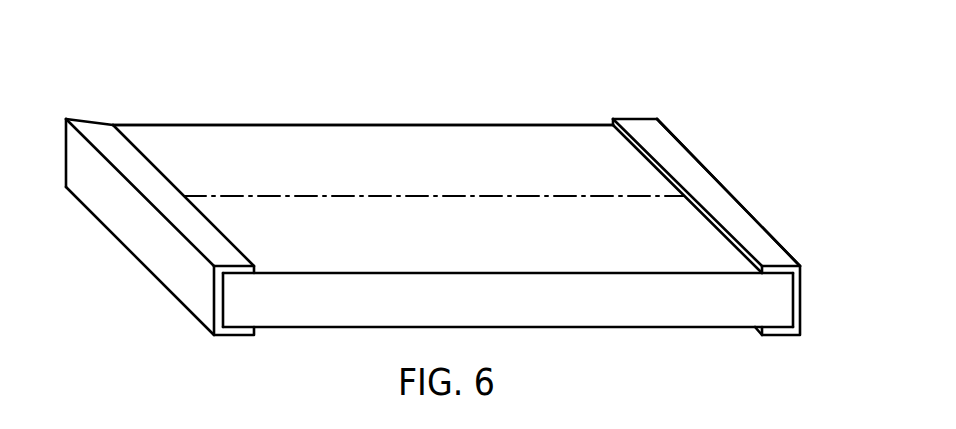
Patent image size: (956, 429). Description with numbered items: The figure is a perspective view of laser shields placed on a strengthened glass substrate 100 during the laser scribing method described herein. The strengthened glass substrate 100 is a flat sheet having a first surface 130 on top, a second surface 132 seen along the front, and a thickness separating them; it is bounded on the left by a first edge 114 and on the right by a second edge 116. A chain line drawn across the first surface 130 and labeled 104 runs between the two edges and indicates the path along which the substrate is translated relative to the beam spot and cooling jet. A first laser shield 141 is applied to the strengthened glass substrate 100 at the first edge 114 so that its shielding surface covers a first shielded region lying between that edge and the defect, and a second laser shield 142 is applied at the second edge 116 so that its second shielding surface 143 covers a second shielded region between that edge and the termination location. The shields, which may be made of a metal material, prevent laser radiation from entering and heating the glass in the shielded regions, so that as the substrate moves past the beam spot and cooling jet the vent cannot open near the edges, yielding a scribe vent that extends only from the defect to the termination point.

The strengthened glass substrate 100 is at (367, 98).
The centerline axis 104 is at (413, 196).
The first edge 114 is at (222, 303).
The second edge 116 is at (793, 302).
The first surface 130 is at (648, 256).
The second surface 132 is at (647, 328).
The first laser shield 141 is at (108, 127).
The second laser shield 142 is at (623, 103).
The second shielding surface 143 is at (655, 124).